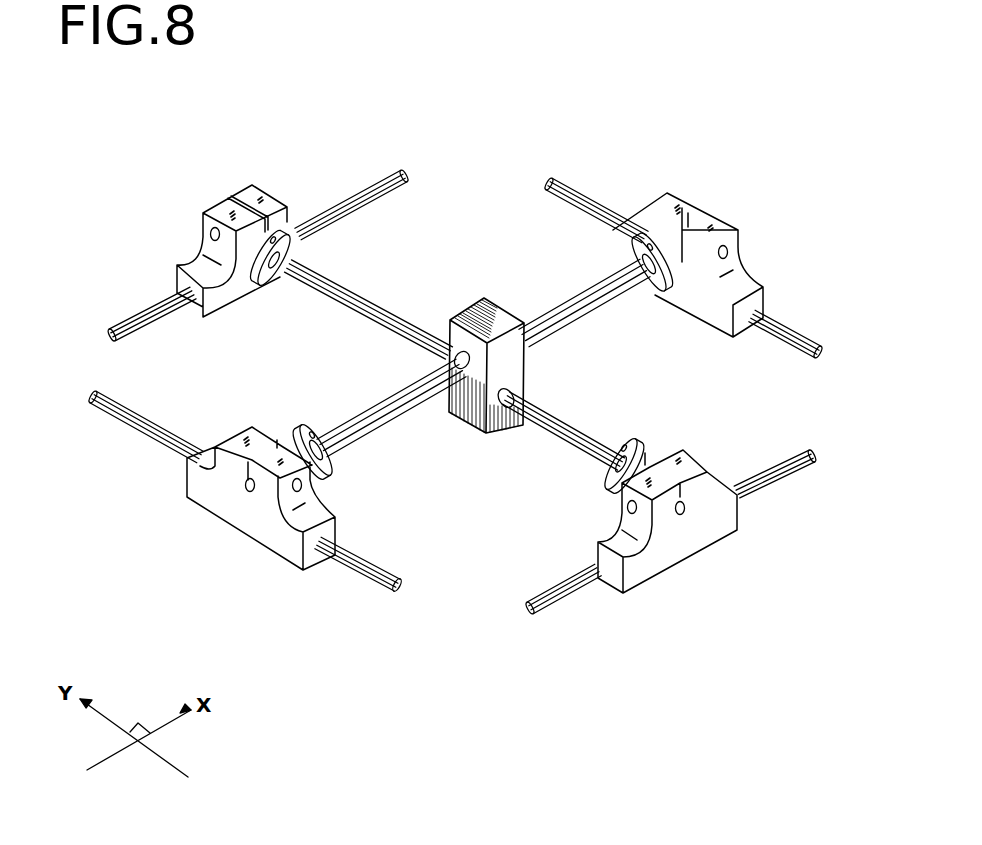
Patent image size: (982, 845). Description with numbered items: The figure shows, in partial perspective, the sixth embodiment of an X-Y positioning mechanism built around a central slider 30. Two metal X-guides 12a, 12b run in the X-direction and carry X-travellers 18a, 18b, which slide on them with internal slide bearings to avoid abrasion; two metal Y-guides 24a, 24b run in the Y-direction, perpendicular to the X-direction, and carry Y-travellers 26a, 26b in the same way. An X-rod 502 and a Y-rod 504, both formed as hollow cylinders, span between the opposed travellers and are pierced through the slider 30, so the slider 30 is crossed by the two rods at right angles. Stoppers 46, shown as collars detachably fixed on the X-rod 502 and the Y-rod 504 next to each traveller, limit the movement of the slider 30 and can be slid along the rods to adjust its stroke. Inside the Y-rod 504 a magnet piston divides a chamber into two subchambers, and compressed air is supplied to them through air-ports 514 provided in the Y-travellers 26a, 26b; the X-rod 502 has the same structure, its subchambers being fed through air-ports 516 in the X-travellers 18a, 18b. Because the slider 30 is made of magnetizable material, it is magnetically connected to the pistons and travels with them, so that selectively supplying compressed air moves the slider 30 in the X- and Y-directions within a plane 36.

The slider 30 is at (492, 320).
The Y-rod 504 is at (400, 298).
The X-rod 502 is at (600, 303).
The stopper 46 is at (262, 250).
The X-traveller 18a is at (716, 562).
The X-traveller 18b is at (225, 208).
The Y-traveller 26a is at (695, 203).
The Y-traveller 26b is at (206, 518).
The X-guide 12a is at (588, 592).
The X-guide 12b is at (350, 203).
The Y-guide 24a is at (783, 323).
The Y-guide 24b is at (123, 413).
The air-port 514 is at (245, 487).
The air-port 516 is at (687, 510).
The plane 36 is at (453, 488).